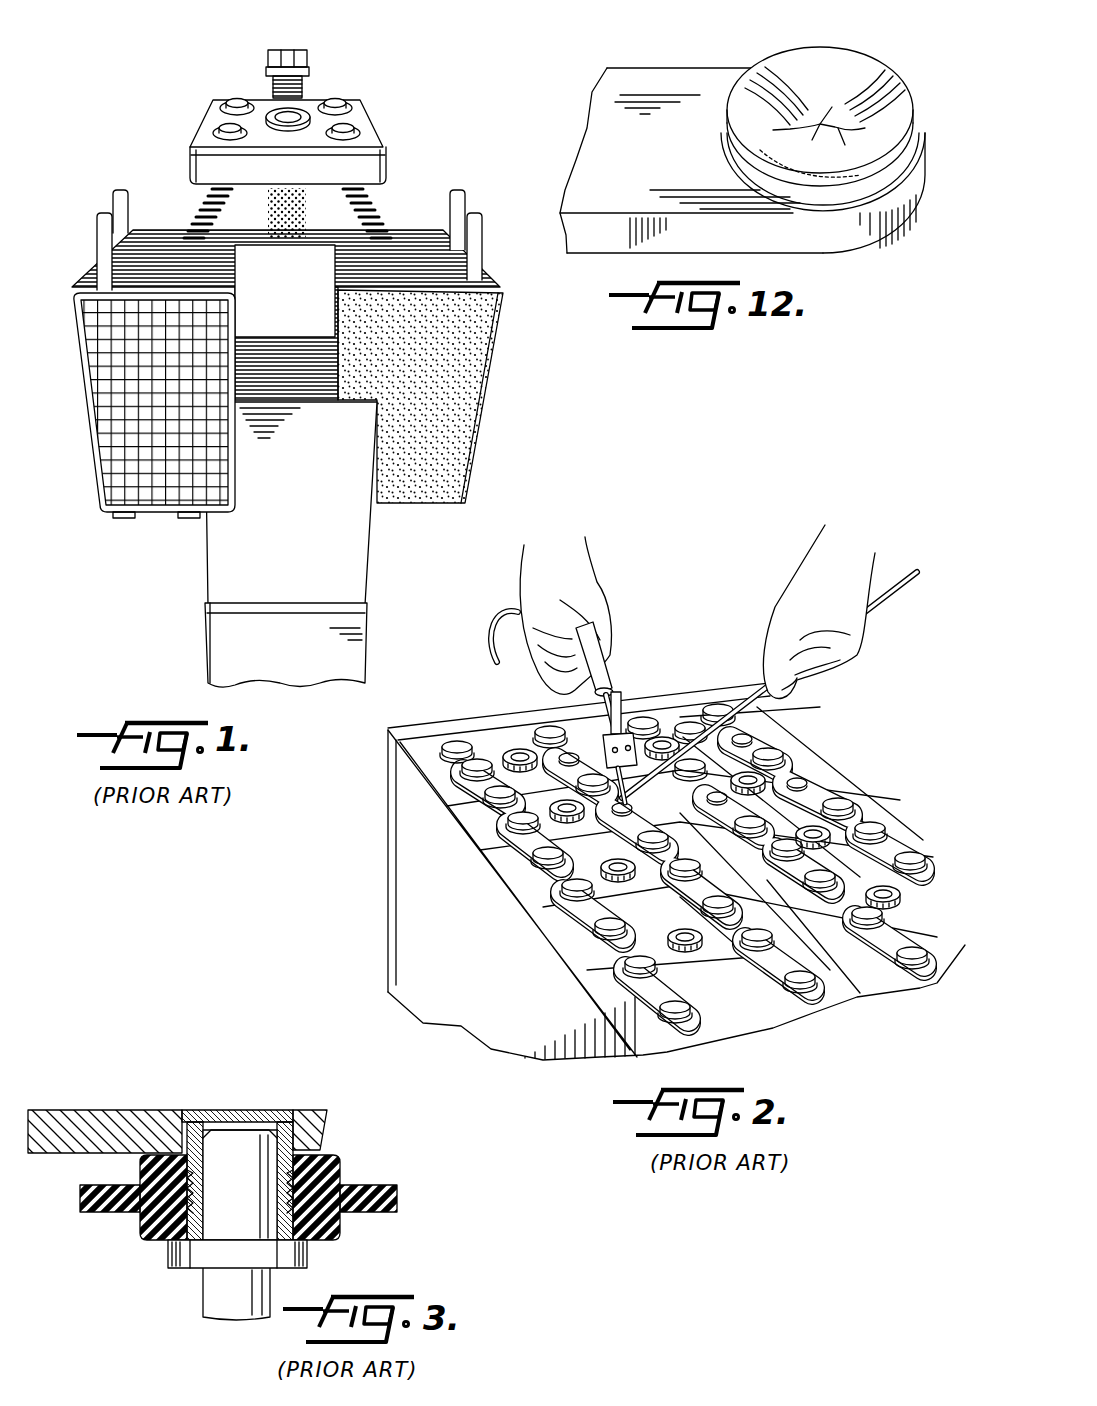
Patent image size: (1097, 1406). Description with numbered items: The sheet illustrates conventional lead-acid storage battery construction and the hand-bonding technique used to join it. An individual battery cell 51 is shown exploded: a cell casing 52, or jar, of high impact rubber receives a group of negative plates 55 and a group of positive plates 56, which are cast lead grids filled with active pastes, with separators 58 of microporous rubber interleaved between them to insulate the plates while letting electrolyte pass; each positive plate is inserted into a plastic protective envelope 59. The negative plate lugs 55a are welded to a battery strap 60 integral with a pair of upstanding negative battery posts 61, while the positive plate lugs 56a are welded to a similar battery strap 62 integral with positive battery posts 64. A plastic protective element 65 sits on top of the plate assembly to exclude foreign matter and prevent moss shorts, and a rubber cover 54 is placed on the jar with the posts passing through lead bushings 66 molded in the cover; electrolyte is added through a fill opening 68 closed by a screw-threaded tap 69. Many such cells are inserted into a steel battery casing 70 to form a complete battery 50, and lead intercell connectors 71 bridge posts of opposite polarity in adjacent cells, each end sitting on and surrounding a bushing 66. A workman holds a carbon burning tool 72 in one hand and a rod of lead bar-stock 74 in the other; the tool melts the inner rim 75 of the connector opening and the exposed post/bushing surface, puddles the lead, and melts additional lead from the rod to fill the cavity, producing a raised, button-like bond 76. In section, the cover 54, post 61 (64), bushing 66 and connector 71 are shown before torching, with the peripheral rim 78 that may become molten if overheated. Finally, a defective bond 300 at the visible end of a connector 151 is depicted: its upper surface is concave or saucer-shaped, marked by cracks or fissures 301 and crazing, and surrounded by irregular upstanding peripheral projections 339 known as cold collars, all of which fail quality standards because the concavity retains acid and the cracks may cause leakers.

In FIG. 2, the industrial battery 50 is at (386, 917).
In FIG. 1, the battery cell 51 is at (188, 535).
In FIG. 2, the battery cell 51 is at (857, 803).
In FIG. 1, the cell casing 52 is at (358, 640).
In FIG. 1, the cover 54 is at (388, 157).
In FIG. 3, the cover 54 is at (350, 1187).
In FIG. 1, the negative plates 55 is at (120, 320).
In FIG. 1, the negative plate lugs 55a is at (80, 300).
In FIG. 1, the positive plates 56 is at (432, 263).
In FIG. 1, the positive plate lugs 56a is at (507, 303).
In FIG. 1, the separators 58 is at (263, 358).
In FIG. 1, the plastic protective envelope 59 is at (463, 387).
In FIG. 1, the battery strap 60 is at (90, 277).
In FIG. 1, the negative battery posts 61 is at (114, 196).
In FIG. 3, the negative battery posts 61 is at (307, 1255).
In FIG. 1, the battery strap 62 is at (481, 264).
In FIG. 1, the positive battery posts 64 is at (468, 206).
In FIG. 1, the protective element 65 is at (367, 204).
In FIG. 1, the lead bushings 66 is at (222, 108).
In FIG. 3, the lead bushings 66 is at (287, 1130).
In FIG. 1, the fill opening 68 is at (294, 110).
In FIG. 2, the fill opening 68 is at (517, 748).
In FIG. 1, the screw-threaded tap 69 is at (290, 50).
In FIG. 2, the steel battery casing 70 is at (450, 722).
In FIG. 2, the intercell connectors 71 is at (503, 846).
In FIG. 3, the intercell connectors 71 is at (97, 1110).
In FIG. 2, the carbon burning tool 72 is at (630, 692).
In FIG. 2, the lead bar-stock rod 74 is at (908, 568).
In FIG. 2, the inner rim 75 is at (778, 749).
In FIG. 3, the inner rim 75 is at (188, 1123).
In FIG. 2, the bond 76 is at (798, 985).
In FIG. 3, the rim 78 is at (320, 1135).
In FIG. 12, the connector 151 is at (650, 38).
In FIG. 12, the battery post/connector bond 300 is at (903, 97).
In FIG. 12, the cracks or fissures 301 is at (773, 130).
In FIG. 12, the peripheral projections 339 is at (878, 53).